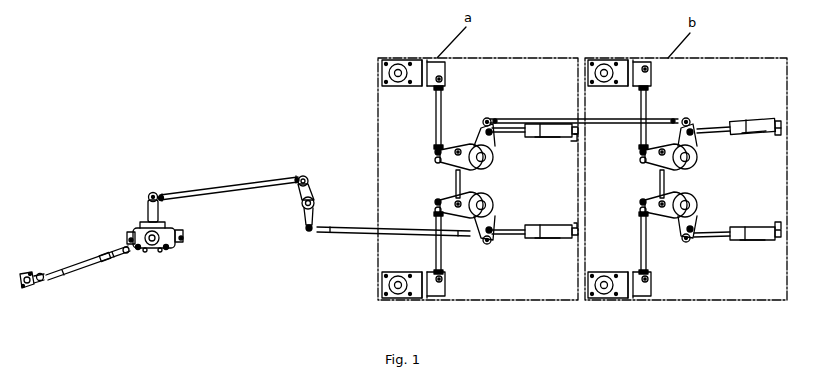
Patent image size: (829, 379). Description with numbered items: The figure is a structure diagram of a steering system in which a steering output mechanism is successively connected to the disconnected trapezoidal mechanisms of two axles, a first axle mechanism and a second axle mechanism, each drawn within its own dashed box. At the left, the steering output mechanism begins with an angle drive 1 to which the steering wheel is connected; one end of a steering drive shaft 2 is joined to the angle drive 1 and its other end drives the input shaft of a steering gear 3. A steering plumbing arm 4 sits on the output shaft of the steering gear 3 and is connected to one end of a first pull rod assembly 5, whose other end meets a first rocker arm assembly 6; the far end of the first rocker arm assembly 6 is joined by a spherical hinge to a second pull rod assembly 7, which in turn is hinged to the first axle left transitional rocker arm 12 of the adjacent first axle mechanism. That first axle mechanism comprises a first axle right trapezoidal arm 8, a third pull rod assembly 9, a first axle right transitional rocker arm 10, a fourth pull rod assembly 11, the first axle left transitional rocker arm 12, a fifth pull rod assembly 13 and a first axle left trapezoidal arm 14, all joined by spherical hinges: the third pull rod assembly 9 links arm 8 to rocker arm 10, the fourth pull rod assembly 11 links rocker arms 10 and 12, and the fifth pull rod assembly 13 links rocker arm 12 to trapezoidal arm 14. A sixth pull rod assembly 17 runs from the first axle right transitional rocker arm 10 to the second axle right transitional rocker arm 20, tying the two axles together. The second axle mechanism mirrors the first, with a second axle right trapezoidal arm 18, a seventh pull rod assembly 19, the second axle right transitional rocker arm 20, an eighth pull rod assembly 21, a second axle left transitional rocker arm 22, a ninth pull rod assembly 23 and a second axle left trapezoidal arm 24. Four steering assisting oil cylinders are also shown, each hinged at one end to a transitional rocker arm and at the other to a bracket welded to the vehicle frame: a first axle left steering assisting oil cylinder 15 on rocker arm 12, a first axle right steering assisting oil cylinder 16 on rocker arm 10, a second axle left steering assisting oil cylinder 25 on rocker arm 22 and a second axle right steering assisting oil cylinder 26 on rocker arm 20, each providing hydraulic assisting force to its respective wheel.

The angle drive 1 is at (24, 272).
The steering drive shaft 2 is at (68, 262).
The steering gear 3 is at (150, 244).
The steering plumbing arm 4 is at (150, 212).
The first pull rod assembly 5 is at (212, 186).
The first rocker arm assembly 6 is at (313, 184).
The second pull rod assembly 7 is at (339, 226).
The first axle right trapezoidal arm 8 is at (413, 82).
The third pull rod assembly 9 is at (437, 105).
The first axle right transitional rocker arm 10 is at (437, 153).
The fourth pull rod assembly 11 is at (456, 180).
The first axle left transitional rocker arm 12 is at (437, 205).
The fifth pull rod assembly 13 is at (437, 242).
The first axle left trapezoidal arm 14 is at (420, 283).
The first axle left steering assisting oil cylinder 15 is at (531, 236).
The first axle right steering assisting oil cylinder 16 is at (531, 136).
The sixth pull rod assembly 17 is at (511, 119).
The second axle right trapezoidal arm 18 is at (617, 82).
The seventh pull rod assembly 19 is at (646, 103).
The second axle right transitional rocker arm 20 is at (642, 153).
The eighth pull rod assembly 21 is at (660, 180).
The second axle left transitional rocker arm 22 is at (642, 205).
The ninth pull rod assembly 23 is at (642, 242).
The second axle left trapezoidal arm 24 is at (632, 283).
The second axle left steering assisting oil cylinder 25 is at (751, 238).
The second axle right steering assisting oil cylinder 26 is at (742, 132).